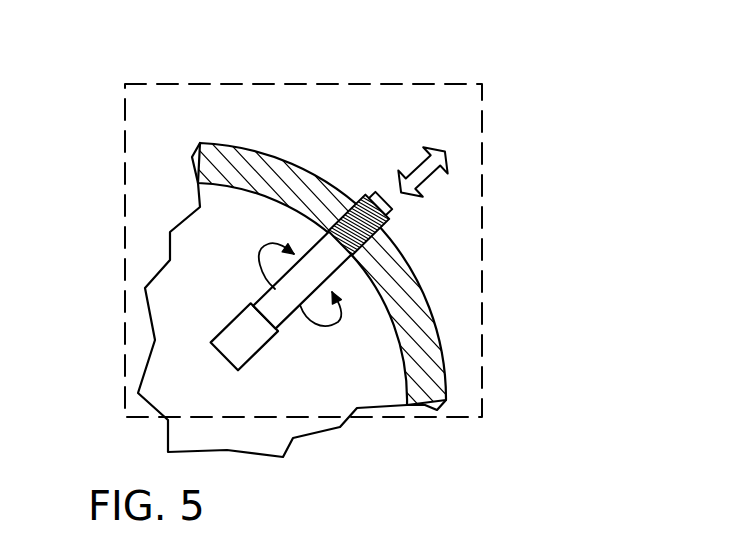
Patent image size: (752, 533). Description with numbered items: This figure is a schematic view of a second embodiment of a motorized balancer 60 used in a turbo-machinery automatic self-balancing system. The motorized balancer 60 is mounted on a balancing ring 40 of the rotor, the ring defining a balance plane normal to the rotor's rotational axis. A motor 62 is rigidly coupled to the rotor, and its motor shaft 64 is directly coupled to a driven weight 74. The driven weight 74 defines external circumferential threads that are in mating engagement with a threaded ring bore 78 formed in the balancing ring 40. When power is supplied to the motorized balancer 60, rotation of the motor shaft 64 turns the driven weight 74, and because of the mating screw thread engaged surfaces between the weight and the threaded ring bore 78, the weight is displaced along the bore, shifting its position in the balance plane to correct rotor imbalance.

The balancing ring 40 is at (518, 373).
The motorized balancer 60 is at (449, 444).
The motor 62 is at (242, 328).
The motor shaft 64 is at (335, 354).
The driven weight 74 is at (362, 198).
The threaded ring bore 78 is at (389, 213).